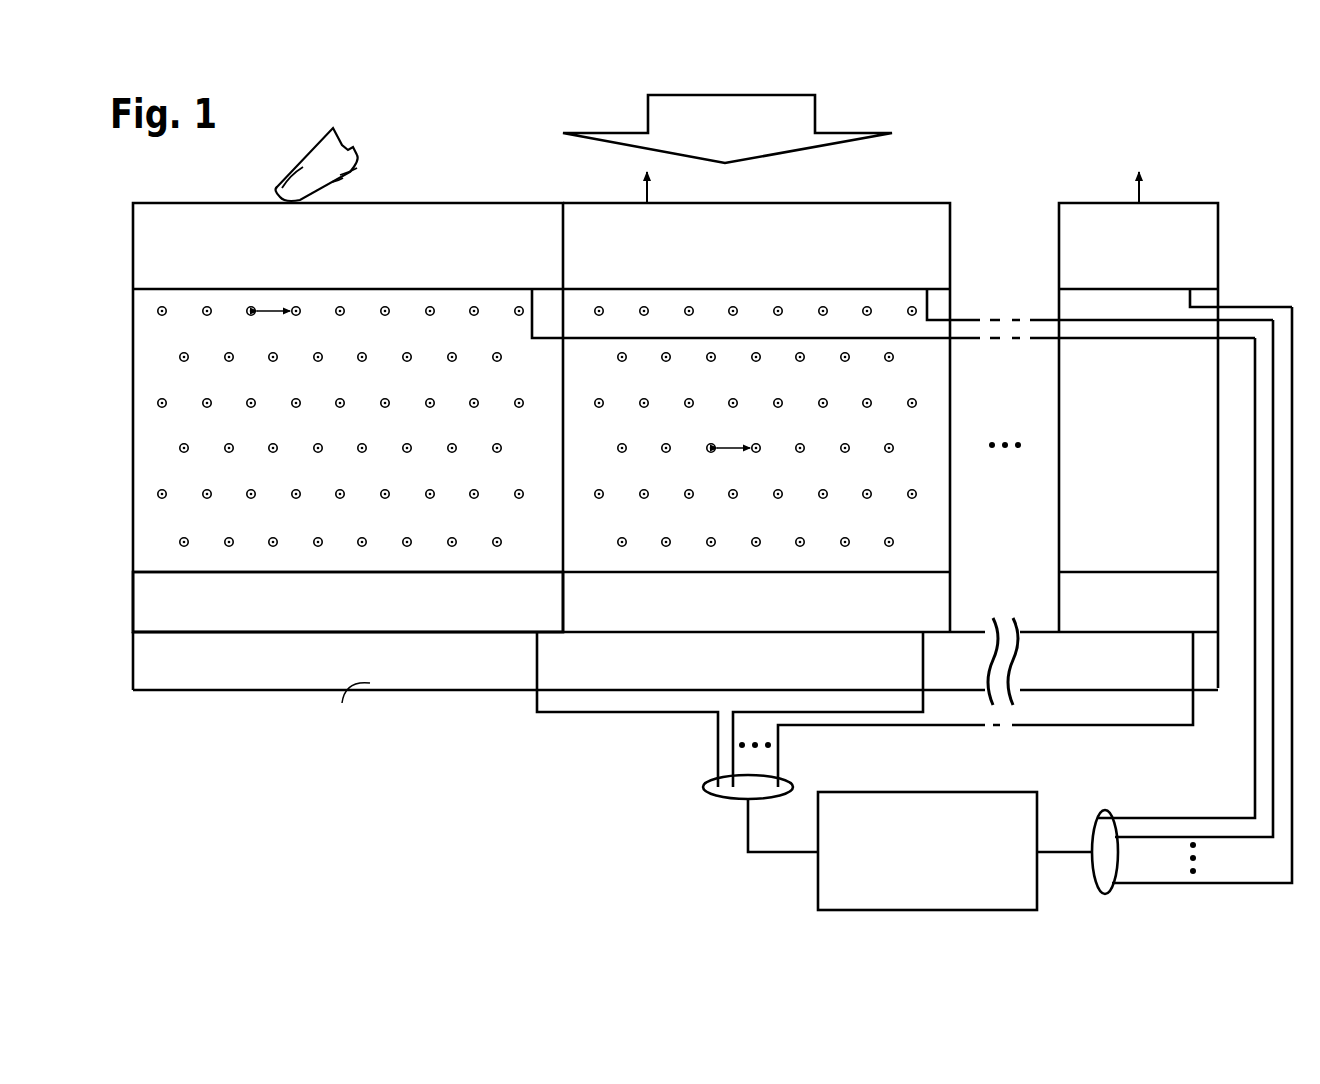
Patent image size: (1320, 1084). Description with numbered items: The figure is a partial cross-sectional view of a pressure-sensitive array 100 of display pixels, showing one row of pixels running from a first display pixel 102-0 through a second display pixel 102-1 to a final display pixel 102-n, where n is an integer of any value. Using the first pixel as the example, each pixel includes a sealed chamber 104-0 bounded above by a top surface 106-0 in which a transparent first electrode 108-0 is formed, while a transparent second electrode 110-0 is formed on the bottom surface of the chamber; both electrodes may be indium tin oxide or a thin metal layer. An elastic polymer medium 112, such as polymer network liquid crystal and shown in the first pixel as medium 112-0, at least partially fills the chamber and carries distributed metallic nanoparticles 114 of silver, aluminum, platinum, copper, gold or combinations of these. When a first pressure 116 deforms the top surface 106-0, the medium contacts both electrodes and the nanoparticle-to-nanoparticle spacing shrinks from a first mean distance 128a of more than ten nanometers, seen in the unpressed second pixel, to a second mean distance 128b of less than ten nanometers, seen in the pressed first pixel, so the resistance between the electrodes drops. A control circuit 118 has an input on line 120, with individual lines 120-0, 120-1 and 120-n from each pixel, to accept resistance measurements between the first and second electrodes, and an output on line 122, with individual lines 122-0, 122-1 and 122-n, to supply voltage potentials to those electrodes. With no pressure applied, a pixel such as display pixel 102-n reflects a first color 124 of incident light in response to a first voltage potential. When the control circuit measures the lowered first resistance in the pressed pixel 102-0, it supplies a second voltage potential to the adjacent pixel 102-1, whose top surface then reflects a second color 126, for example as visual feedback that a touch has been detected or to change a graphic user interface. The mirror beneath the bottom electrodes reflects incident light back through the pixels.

The array 100 is at (184, 161).
The first display pixel 102-0 is at (348, 417).
The second display pixel 102-1 is at (756, 417).
The display pixel 102-n is at (1170, 384).
The sealed chamber 104-0 is at (500, 566).
The top surface 106-0 is at (348, 254).
The first electrode 108-0 is at (416, 271).
The second electrode 110-0 is at (515, 614).
The elastic polymer medium 112 is at (148, 552).
The elastic polymer medium 112-0 is at (512, 344).
The metallic nanoparticles 114 is at (208, 408).
The first pressure 116 is at (355, 165).
The control circuit 118 is at (1000, 874).
The input line 120 is at (745, 830).
The input line 120-0 is at (575, 712).
The input line 120-1 is at (748, 710).
The input line 120-n is at (830, 725).
The output line 122 is at (1060, 847).
The output line 122-0 is at (1148, 818).
The output line 122-1 is at (1273, 737).
The output line 122-n is at (1160, 885).
The first color 124 is at (1187, 158).
The second color 126 is at (650, 190).
The first mean distance 128a is at (733, 453).
The second mean distance 128b is at (299, 325).